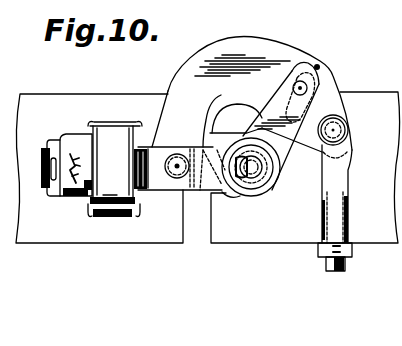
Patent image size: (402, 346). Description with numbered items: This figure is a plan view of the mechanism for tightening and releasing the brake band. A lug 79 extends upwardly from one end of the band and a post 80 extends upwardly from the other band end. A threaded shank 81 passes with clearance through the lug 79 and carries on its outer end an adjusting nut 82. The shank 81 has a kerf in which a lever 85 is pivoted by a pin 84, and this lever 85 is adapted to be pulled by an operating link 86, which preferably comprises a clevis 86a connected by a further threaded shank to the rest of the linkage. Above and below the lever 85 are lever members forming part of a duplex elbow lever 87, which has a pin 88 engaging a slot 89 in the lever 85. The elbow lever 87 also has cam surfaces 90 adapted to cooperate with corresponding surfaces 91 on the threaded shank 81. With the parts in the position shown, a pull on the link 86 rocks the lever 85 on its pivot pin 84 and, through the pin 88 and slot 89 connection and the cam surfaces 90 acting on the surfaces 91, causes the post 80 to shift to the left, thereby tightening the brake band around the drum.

The lug 79 is at (114, 143).
The post 80 is at (274, 189).
The threaded shank 81 is at (148, 142).
The adjusting nut 82 is at (73, 138).
The pin 84 is at (181, 152).
The lever 85 is at (268, 47).
The operating link 86 is at (342, 188).
The clevis 86a is at (372, 148).
The duplex elbow lever 87 is at (323, 91).
The pin 88 is at (315, 80).
The slot 89 is at (317, 62).
The cam surfaces 90 is at (216, 101).
The surfaces 91 is at (234, 197).